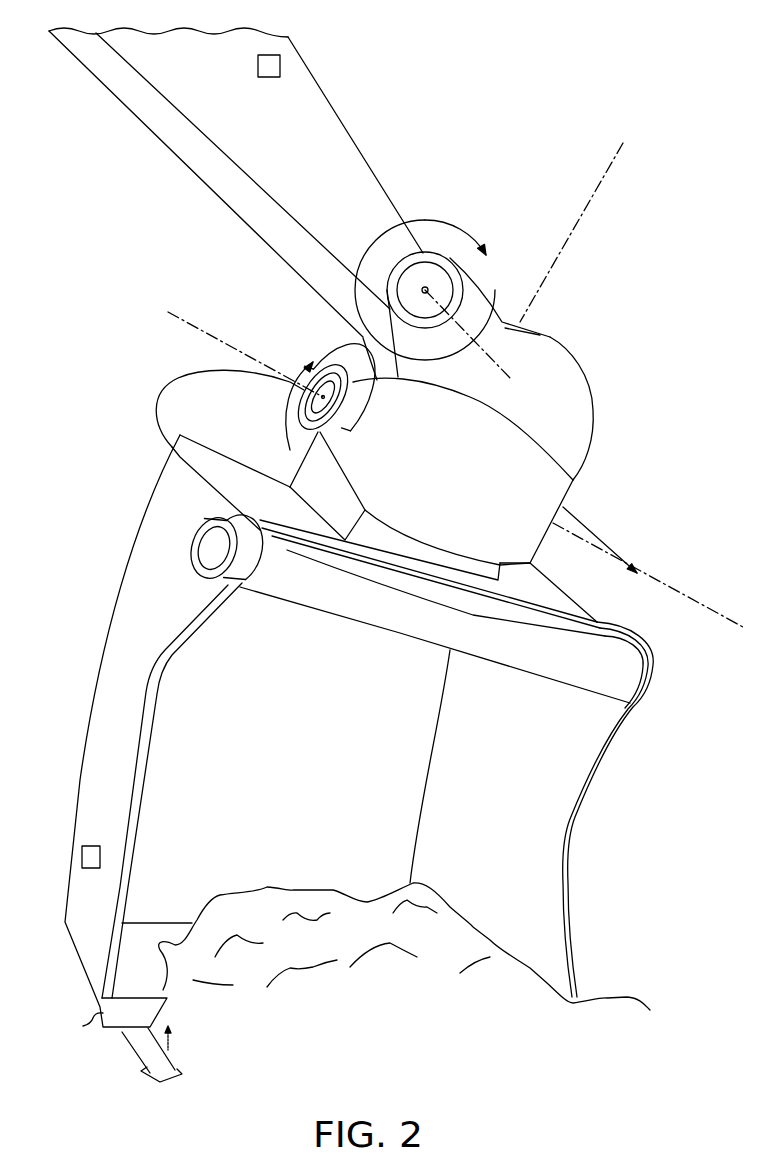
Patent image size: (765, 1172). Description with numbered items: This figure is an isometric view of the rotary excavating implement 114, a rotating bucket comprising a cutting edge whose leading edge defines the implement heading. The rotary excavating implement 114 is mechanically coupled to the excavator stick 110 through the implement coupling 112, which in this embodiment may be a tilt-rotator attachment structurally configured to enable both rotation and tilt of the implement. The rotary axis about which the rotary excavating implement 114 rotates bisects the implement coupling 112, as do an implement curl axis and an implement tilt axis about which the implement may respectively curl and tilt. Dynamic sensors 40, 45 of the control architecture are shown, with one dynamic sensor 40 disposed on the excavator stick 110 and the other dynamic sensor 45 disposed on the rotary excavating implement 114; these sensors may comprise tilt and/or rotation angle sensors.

The dynamic sensor 40 is at (283, 64).
The dynamic sensor 45 is at (82, 857).
The excavator stick 110 is at (347, 137).
The implement coupling 112 is at (593, 395).
The rotary excavating implement 114 is at (590, 795).